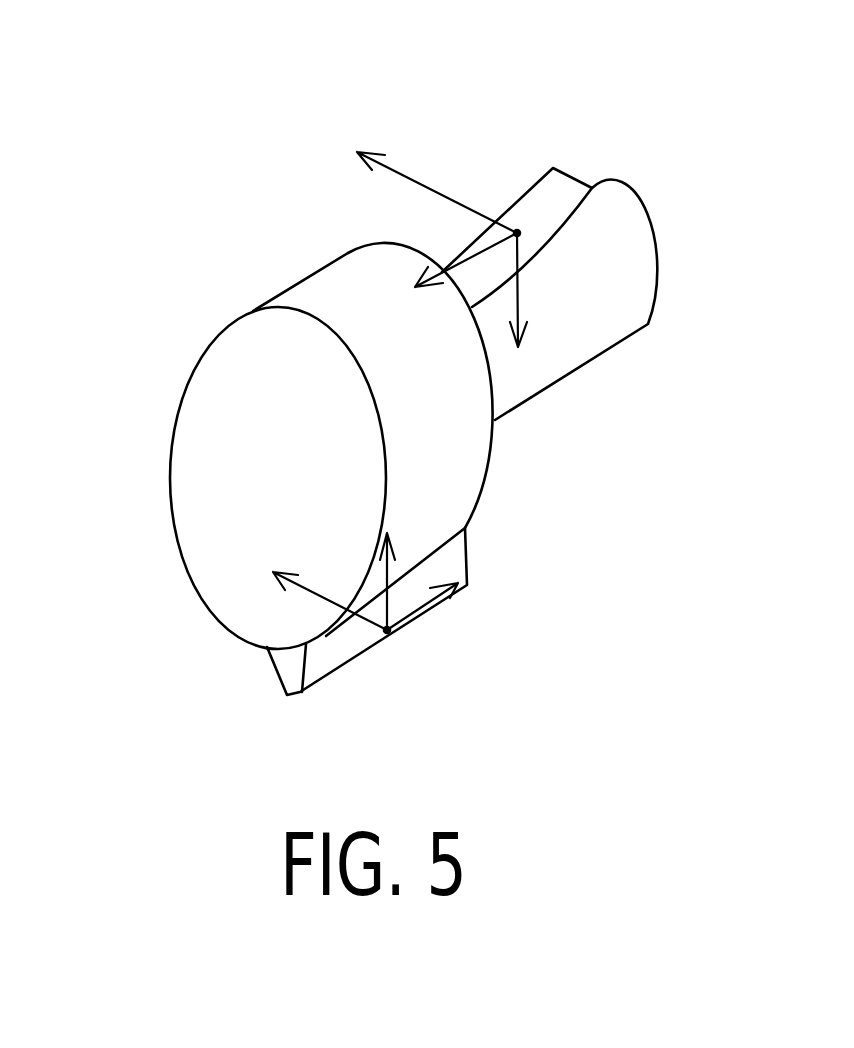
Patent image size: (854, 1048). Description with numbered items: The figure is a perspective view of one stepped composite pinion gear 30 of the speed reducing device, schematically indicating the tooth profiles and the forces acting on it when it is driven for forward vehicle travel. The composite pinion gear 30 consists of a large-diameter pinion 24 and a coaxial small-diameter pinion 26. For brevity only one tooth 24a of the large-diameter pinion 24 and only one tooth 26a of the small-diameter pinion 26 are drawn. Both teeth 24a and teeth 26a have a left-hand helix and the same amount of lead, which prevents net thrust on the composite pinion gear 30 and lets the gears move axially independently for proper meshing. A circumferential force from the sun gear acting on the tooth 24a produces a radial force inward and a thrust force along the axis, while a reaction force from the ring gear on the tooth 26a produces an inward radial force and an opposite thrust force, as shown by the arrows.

The composite pinion gear 30 is at (135, 145).
The large-diameter pinion 24 is at (315, 297).
The teeth of the large-diameter pinion 24a is at (340, 653).
The small-diameter pinion 26 is at (632, 303).
The teeth of the small-diameter pinion 26a is at (545, 185).